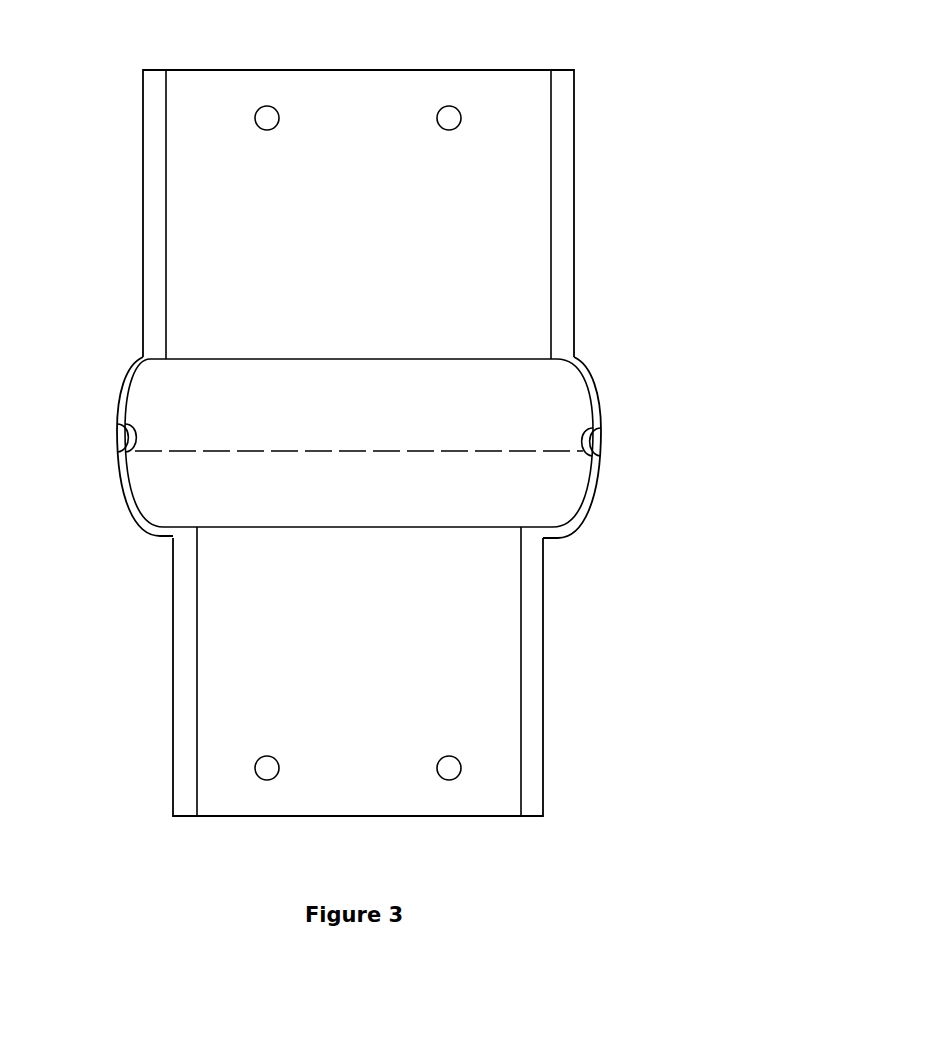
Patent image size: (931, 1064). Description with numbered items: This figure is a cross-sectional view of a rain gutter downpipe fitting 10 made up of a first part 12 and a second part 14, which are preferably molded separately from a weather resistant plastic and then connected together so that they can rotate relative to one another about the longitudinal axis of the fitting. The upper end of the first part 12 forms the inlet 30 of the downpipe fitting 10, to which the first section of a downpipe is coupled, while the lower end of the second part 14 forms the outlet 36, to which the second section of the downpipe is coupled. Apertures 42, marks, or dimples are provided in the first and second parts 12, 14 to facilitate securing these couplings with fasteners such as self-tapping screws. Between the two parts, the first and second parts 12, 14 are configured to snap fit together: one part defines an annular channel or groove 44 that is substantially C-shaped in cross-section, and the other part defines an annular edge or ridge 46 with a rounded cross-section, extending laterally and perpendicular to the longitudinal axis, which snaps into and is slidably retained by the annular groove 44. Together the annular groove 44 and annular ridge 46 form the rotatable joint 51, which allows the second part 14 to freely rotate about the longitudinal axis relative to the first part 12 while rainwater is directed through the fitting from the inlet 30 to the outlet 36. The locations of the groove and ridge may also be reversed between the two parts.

The downpipe fitting 10 is at (692, 118).
The first part 12 is at (575, 232).
The second part 14 is at (544, 695).
The inlet 30 is at (498, 68).
The outlet 36 is at (228, 818).
The apertures 42 is at (279, 128).
The annular groove 44 is at (580, 435).
The annular ridge 46 is at (597, 440).
The rotatable joint 51 is at (118, 437).